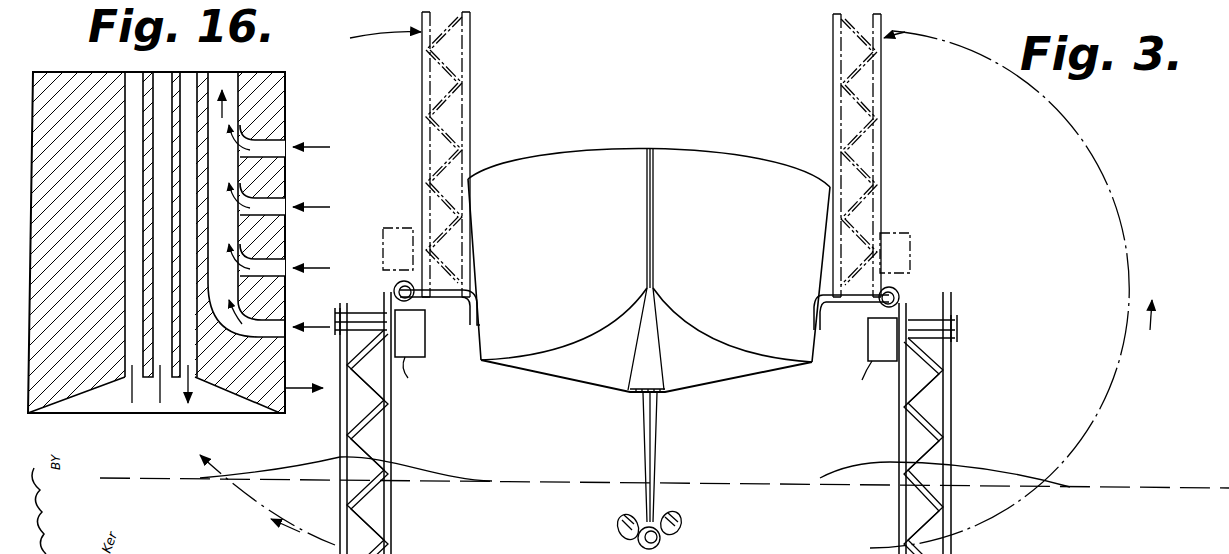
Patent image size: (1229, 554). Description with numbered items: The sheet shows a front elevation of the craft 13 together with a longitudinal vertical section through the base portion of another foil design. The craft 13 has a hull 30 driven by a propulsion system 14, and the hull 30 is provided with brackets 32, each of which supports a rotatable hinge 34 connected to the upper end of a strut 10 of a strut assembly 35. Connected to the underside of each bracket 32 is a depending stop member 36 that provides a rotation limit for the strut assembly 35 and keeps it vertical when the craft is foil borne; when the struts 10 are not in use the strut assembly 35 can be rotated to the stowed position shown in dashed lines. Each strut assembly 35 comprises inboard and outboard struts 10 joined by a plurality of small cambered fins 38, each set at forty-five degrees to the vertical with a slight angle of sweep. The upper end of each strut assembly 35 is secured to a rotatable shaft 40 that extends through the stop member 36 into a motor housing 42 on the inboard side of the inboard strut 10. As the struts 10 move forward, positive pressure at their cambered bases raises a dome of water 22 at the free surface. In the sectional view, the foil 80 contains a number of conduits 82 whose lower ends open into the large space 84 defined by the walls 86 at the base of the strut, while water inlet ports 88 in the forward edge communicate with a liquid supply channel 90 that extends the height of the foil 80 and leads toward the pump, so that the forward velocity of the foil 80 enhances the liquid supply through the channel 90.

In FIG. 3, the strut 10 is at (393, 513).
In FIG. 3, the craft 13 is at (574, 150).
In FIG. 3, the propulsion system 14 is at (676, 529).
In FIG. 3, the dome of water 22 is at (326, 457).
In FIG. 3, the hull 30 is at (749, 339).
In FIG. 3, the bracket 32 is at (466, 288).
In FIG. 3, the rotatable hinge 34 is at (396, 284).
In FIG. 3, the strut assembly 35 is at (393, 428).
In FIG. 3, the stop member 36 is at (426, 310).
In FIG. 3, the cambered fin 38 is at (355, 520).
In FIG. 3, the rotatable shaft 40 is at (361, 318).
In FIG. 3, the motor housing 42 is at (637, 379).
In FIG. 16, the foil 80 is at (289, 86).
In FIG. 16, the conduit 82 is at (173, 75).
In FIG. 16, the space 84 is at (163, 410).
In FIG. 16, the wall 86 is at (233, 394).
In FIG. 16, the water inlet port 88 is at (284, 213).
In FIG. 16, the liquid supply channel 90 is at (222, 74).